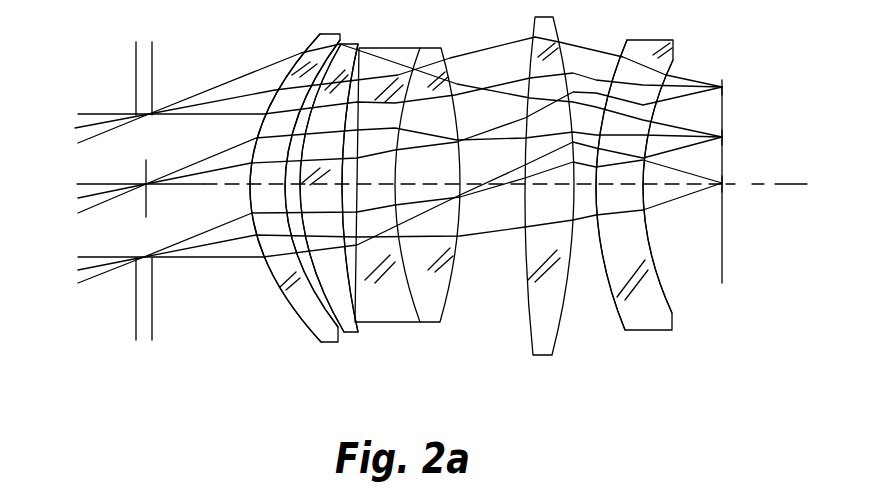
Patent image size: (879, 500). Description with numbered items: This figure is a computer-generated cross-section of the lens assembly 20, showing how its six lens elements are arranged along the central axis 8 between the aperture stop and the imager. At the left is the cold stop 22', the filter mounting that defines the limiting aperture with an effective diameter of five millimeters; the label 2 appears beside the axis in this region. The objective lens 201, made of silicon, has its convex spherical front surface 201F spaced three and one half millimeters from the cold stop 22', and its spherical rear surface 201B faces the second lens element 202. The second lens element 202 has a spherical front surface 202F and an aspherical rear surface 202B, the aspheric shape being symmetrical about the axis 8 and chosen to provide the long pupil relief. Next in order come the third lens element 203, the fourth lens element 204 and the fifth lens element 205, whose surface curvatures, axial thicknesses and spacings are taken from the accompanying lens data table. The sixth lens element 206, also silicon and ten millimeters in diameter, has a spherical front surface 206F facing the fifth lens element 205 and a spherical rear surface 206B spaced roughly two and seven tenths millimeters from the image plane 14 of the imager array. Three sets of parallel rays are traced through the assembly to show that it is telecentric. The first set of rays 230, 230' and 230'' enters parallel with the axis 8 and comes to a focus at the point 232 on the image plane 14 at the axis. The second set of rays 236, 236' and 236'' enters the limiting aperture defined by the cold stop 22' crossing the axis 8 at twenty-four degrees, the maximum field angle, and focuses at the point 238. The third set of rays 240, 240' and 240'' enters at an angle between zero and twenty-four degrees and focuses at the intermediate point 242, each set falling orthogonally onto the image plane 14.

The optical axis / entrance pupil location 2 is at (159, 198).
The axis 8 is at (795, 186).
The image plane 14 is at (722, 283).
The lens assembly 20 is at (421, 397).
The cold stop 22' is at (164, 190).
The objective lens 201 is at (315, 342).
The front surface of objective lens 201F is at (287, 305).
The rear surface of objective lens 201B is at (318, 333).
The second lens element 202 is at (353, 333).
The front surface of second lens element 202F is at (270, 268).
The aspheric rear surface of second lens element 202B is at (350, 88).
The third lens element 203 is at (398, 322).
The fourth lens element 204 is at (430, 322).
The fifth lens element 205 is at (529, 320).
The sixth lens element 206 is at (653, 332).
The front surface of sixth lens element 206F is at (625, 328).
The rear surface of sixth lens element 206B is at (656, 275).
The first-set ray 230 is at (387, 187).
The first-set ray 230' is at (400, 126).
The first-set ray 230'' is at (388, 203).
The focus point 232 is at (700, 198).
The second-set ray 236 is at (400, 149).
The second-set ray 236' is at (400, 84).
The second-set ray 236'' is at (400, 208).
The focus point 238 is at (720, 85).
The third-set ray 240 is at (400, 143).
The third-set ray 240' is at (382, 84).
The third-set ray 240'' is at (405, 217).
The intermediate focus point 242 is at (723, 135).